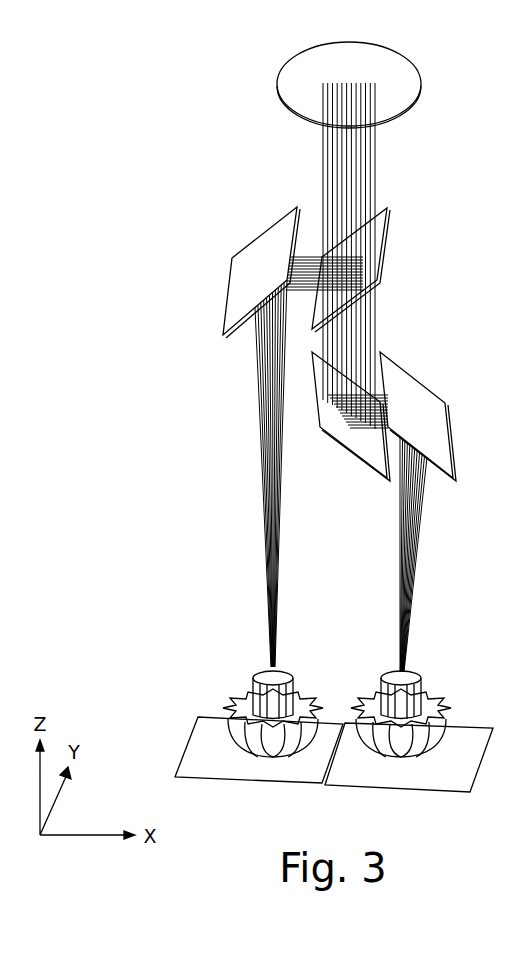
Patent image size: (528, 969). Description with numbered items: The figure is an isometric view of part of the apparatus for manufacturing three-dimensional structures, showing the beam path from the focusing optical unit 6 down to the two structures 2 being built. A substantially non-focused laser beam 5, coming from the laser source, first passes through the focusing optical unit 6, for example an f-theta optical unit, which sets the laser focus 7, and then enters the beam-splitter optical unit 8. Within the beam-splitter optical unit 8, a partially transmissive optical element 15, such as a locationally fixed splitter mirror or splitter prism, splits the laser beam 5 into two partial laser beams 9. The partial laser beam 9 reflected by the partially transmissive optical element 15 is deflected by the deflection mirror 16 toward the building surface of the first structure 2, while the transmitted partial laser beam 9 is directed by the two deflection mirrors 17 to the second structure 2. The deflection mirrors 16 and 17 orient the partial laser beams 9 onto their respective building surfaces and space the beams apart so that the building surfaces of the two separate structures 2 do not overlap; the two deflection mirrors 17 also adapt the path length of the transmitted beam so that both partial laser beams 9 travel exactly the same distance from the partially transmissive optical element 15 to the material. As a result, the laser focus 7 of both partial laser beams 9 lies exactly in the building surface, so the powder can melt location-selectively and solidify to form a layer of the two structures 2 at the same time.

The three-dimensional structure 2 is at (280, 723).
The laser beam 5 is at (345, 148).
The focusing optical unit 6 is at (398, 61).
The laser focus 7 is at (268, 668).
The beam-splitter optical unit 8 is at (436, 186).
The partial laser beam 9 is at (304, 258).
The partially transmissive optical element 15 is at (373, 232).
The deflection mirror 16 is at (243, 281).
The deflection mirror 17 is at (422, 402).